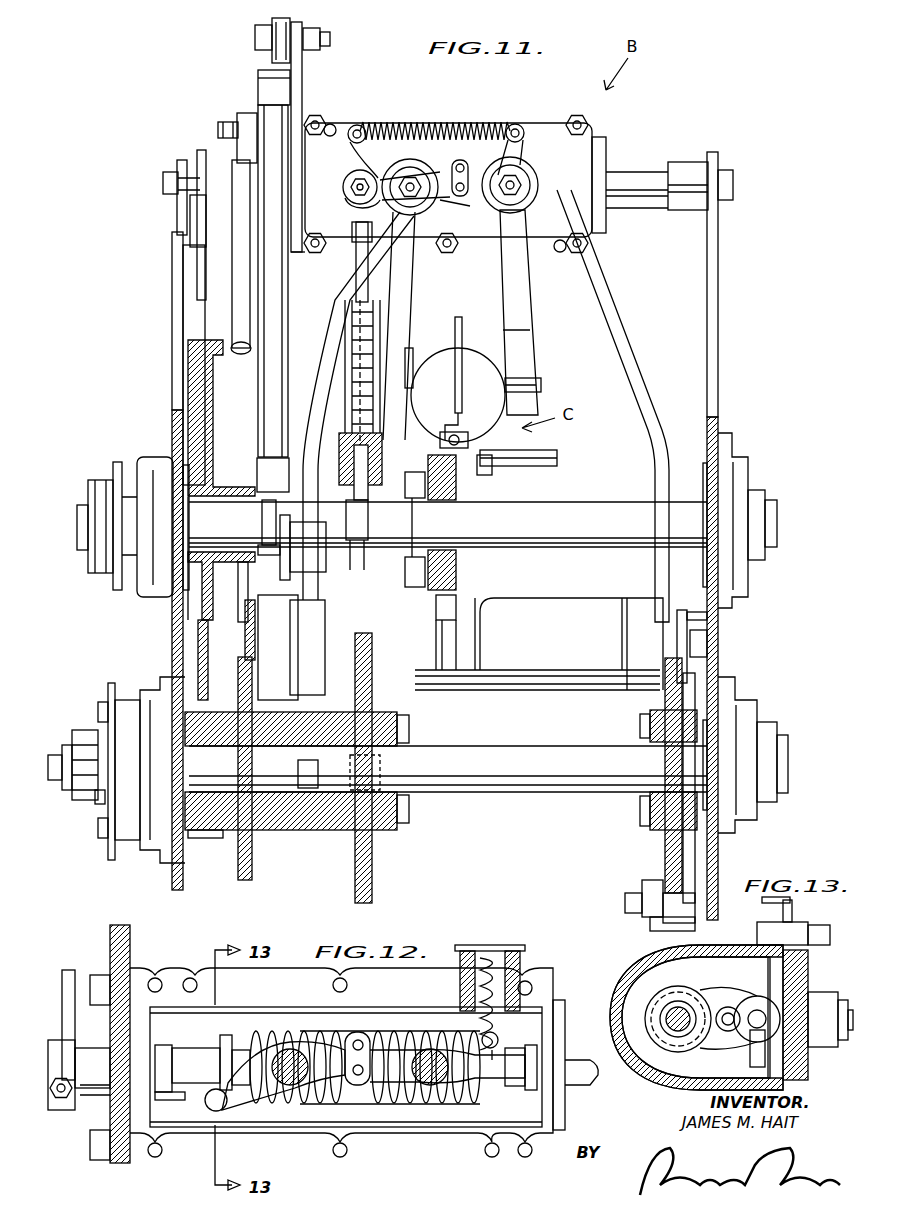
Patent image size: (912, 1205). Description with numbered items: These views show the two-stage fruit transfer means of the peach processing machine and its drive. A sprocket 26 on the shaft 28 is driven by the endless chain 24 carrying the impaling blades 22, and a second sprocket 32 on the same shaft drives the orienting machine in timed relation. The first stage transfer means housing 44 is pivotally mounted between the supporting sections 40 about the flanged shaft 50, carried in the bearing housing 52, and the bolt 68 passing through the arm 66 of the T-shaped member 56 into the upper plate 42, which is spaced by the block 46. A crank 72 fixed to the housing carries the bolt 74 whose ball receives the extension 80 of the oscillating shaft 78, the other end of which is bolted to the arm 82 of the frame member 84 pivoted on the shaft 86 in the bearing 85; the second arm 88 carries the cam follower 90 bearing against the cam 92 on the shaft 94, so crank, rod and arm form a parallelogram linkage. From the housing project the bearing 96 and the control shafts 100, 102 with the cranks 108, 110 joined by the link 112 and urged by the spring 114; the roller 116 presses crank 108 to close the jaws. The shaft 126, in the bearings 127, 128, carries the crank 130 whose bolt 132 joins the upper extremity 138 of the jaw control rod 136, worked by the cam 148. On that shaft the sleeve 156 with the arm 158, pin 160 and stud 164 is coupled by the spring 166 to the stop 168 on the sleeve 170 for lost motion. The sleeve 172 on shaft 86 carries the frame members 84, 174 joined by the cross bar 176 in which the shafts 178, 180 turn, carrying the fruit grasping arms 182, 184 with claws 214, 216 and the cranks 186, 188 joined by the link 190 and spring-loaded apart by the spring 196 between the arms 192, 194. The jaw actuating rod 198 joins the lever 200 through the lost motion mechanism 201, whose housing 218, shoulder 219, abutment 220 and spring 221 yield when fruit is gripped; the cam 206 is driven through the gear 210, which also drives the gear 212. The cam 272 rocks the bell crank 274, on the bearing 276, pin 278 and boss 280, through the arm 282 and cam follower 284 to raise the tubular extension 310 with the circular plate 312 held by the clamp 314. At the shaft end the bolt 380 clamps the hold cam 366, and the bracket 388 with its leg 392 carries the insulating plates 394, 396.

In FIG. 11, the impaling blade 22 is at (457, 408).
In FIG. 11, the endless chain 24 is at (438, 612).
In FIG. 11, the sprocket 26 is at (452, 575).
In FIG. 11, the shaft 28 is at (602, 525).
In FIG. 11, the second sprocket 32 is at (105, 578).
In FIG. 11, the transfer means supporting section 40 is at (175, 268).
In FIG. 11, the upper plate 42 is at (195, 216).
In FIG. 11, the first stage transfer means housing 44 is at (607, 128).
In FIG. 12, the first stage transfer means housing 44 is at (418, 1147).
In FIG. 13, the first stage transfer means housing 44 is at (617, 975).
In FIG. 11, the block 46 is at (188, 279).
In FIG. 11, the shaft 50 is at (628, 175).
In FIG. 12, the shaft 50 is at (585, 1080).
In FIG. 11, the bearing housing 52 is at (680, 162).
In FIG. 11, the T-shaped member 56 is at (212, 160).
In FIG. 11, the arm 66 is at (180, 165).
In FIG. 11, the bolt 68 is at (160, 183).
In FIG. 11, the crank 72 is at (304, 84).
In FIG. 12, the crank 72 is at (130, 937).
In FIG. 11, the bolt 74 is at (330, 40).
In FIG. 11, the oscillating shaft 78 is at (275, 270).
In FIG. 11, the extension 80 is at (275, 28).
In FIG. 11, the arm 82 is at (308, 572).
In FIG. 11, the frame member 84 is at (302, 488).
In FIG. 11, the bearing 85 is at (690, 600).
In FIG. 11, the shaft 86 is at (292, 652).
In FIG. 11, the second arm 88 is at (325, 698).
In FIG. 11, the cam follower 90 is at (378, 762).
In FIG. 11, the cam 92 is at (366, 635).
In FIG. 11, the shaft 94 is at (290, 757).
In FIG. 13, the fruit grasping arm support bearing 96 is at (818, 995).
In FIG. 12, the control shaft 100 is at (293, 1088).
In FIG. 13, the control shaft 100 is at (846, 1005).
In FIG. 12, the control shaft 102 is at (430, 1088).
In FIG. 12, the crank 108 is at (305, 1040).
In FIG. 13, the crank 108 is at (795, 1055).
In FIG. 12, the crank 110 is at (390, 1090).
In FIG. 12, the link 112 is at (360, 1035).
In FIG. 12, the spring 114 is at (520, 968).
In FIG. 12, the roller 116 is at (225, 1098).
In FIG. 13, the roller 116 is at (755, 996).
In FIG. 12, the shaft 126 is at (52, 1045).
In FIG. 13, the shaft 126 is at (682, 1032).
In FIG. 12, the bearing 127 is at (525, 1085).
In FIG. 12, the bearing 128 is at (90, 1090).
In FIG. 11, the crank 130 is at (262, 110).
In FIG. 12, the crank 130 is at (68, 968).
In FIG. 11, the bolt 132 is at (220, 128).
In FIG. 11, the jaw control rod 136 is at (235, 290).
In FIG. 11, the upper extremity 138 is at (245, 115).
In FIG. 11, the cam 148 is at (252, 862).
In FIG. 12, the sleeve 156 is at (330, 1090).
In FIG. 12, the arm 158 is at (200, 1060).
In FIG. 12, the pin 160 is at (222, 1062).
In FIG. 12, the stud 164 is at (300, 1052).
In FIG. 12, the spring 166 is at (405, 1040).
In FIG. 12, the stop 168 is at (165, 1092).
In FIG. 13, the stop 168 is at (750, 1048).
In FIG. 12, the sleeve 170 is at (168, 1050).
In FIG. 13, the sleeve 170 is at (692, 1000).
In FIG. 11, the sleeve 172 is at (540, 600).
In FIG. 11, the frame member 174 is at (610, 315).
In FIG. 11, the cross bar 176 is at (475, 150).
In FIG. 11, the shaft 178 is at (416, 200).
In FIG. 11, the shaft 180 is at (522, 183).
In FIG. 11, the fruit grasping arm 182 is at (400, 280).
In FIG. 11, the fruit grasping arm 184 is at (525, 296).
In FIG. 11, the crank 186 is at (352, 172).
In FIG. 11, the crank 188 is at (476, 220).
In FIG. 11, the link 190 is at (462, 155).
In FIG. 11, the upwardly projecting arm 192 is at (348, 150).
In FIG. 11, the upwardly projecting arm 194 is at (530, 155).
In FIG. 11, the spring 196 is at (383, 120).
In FIG. 11, the jaw actuating rod 198 is at (356, 282).
In FIG. 11, the lever 200 is at (318, 525).
In FIG. 11, the lost motion mechanism 201 is at (338, 378).
In FIG. 11, the cam 206 is at (260, 630).
In FIG. 11, the gear 210 is at (205, 386).
In FIG. 11, the gear 212 is at (210, 820).
In FIG. 11, the fruit engaging claw 214 is at (412, 350).
In FIG. 11, the fruit engaging claw 216 is at (552, 374).
In FIG. 11, the housing 218 is at (348, 362).
In FIG. 11, the annular spring shoulder 219 is at (352, 438).
In FIG. 11, the abutment 220 is at (378, 438).
In FIG. 11, the spring 221 is at (345, 345).
In FIG. 11, the cam 272 is at (663, 828).
In FIG. 11, the bell crank 274 is at (624, 882).
In FIG. 11, the bearing 276 is at (690, 880).
In FIG. 11, the pin 278 is at (622, 900).
In FIG. 11, the boss 280 is at (735, 870).
In FIG. 11, the arm 282 is at (650, 930).
In FIG. 11, the cam follower 284 is at (652, 890).
In FIG. 11, the hollow tubular extension 310 is at (557, 457).
In FIG. 11, the circular plate 312 is at (500, 445).
In FIG. 11, the clamp 314 is at (492, 470).
In FIG. 11, the hold cam 366 is at (72, 795).
In FIG. 11, the bolt 380 is at (52, 755).
In FIG. 11, the bracket 388 is at (145, 838).
In FIG. 11, the leg 392 is at (128, 705).
In FIG. 11, the insulating plate 394 is at (110, 690).
In FIG. 11, the second insulating plate 396 is at (98, 805).